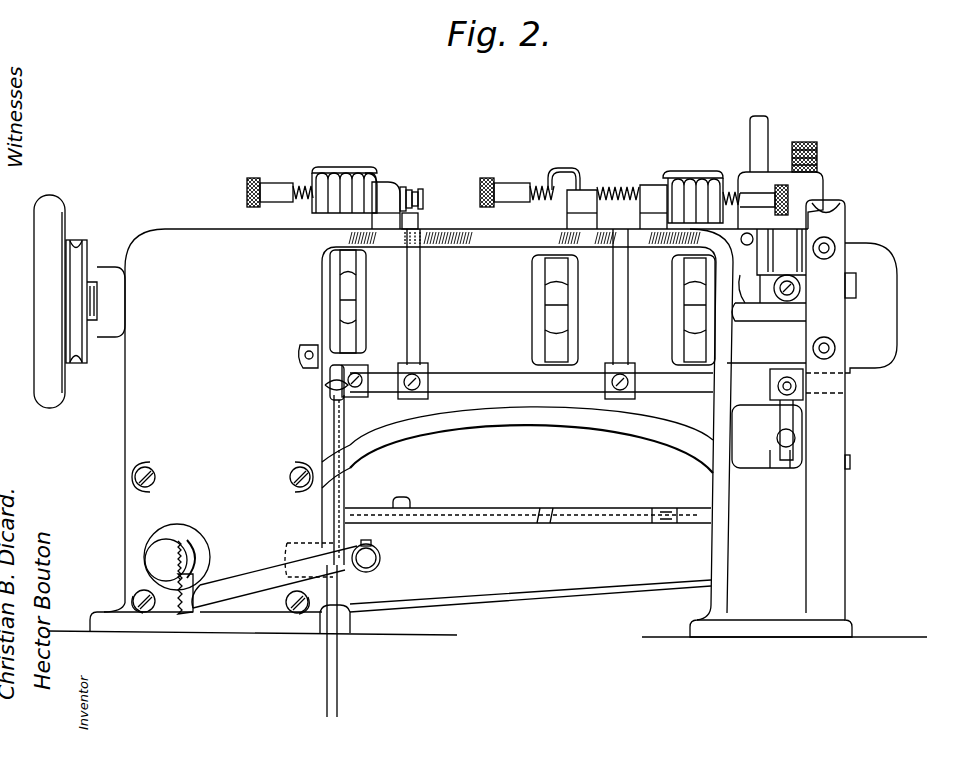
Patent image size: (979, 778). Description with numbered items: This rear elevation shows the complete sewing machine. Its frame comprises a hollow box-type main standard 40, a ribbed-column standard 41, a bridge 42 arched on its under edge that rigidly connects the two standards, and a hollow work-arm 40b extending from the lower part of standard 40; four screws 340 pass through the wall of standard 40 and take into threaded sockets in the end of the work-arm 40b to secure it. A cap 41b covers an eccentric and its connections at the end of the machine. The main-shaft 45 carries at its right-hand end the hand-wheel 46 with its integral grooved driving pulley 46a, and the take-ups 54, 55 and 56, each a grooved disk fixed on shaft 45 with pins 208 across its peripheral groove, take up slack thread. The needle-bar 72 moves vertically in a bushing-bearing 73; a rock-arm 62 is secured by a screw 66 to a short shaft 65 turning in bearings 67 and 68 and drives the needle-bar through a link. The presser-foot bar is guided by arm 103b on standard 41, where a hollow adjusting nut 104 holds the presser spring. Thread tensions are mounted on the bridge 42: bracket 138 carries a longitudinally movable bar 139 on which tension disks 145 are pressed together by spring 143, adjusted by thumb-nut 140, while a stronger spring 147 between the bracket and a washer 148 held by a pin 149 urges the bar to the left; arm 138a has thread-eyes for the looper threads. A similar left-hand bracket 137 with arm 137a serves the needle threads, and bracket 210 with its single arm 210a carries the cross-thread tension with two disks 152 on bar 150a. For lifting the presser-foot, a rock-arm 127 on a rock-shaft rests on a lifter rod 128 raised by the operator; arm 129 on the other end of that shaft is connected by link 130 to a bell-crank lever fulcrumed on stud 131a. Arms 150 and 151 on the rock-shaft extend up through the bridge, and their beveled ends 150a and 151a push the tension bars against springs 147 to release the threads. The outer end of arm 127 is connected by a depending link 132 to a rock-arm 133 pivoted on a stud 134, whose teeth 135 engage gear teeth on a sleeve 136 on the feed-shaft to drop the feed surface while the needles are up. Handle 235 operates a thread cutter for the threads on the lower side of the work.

The main standard 40 is at (128, 442).
The work-arm 40b is at (570, 585).
The standard 41 is at (845, 540).
The cap 41b is at (888, 318).
The bridge 42 is at (527, 416).
The main-shaft 45 is at (330, 305).
The hand-wheel 46 is at (48, 406).
The grooved driving pulley 46a is at (78, 355).
The take-up 54 is at (350, 305).
The take-up 55 is at (545, 295).
The take-up 56 is at (688, 320).
The rock-arm 62 is at (790, 253).
The short shaft 65 is at (857, 287).
The screw 66 is at (788, 297).
The bearing 67 is at (803, 283).
The bearing 68 is at (767, 292).
The needle-bar 72 is at (762, 118).
The bushing-bearing 73 is at (752, 180).
The arm 103b is at (752, 183).
The hollow adjusting nut 104 is at (818, 165).
The rock-arm 127 is at (330, 385).
The lifter rod 128 is at (338, 697).
The arm 129 is at (790, 404).
The link 130 is at (776, 447).
The stud 131a is at (851, 462).
The depending link 132 is at (344, 498).
The rock-arm 133 is at (250, 580).
The stud 134 is at (374, 565).
The teeth 135 is at (185, 612).
The sleeve 136 is at (160, 558).
The bracket 137 is at (655, 198).
The arm 137a is at (722, 165).
The bracket 138 is at (392, 183).
The arm 138a is at (330, 167).
The bar 139 is at (418, 198).
The thumb-nut 140 is at (268, 186).
The spring 143 is at (302, 185).
The tension disks 145 is at (360, 180).
The spring 147 is at (406, 190).
The washer 148 is at (412, 193).
The pin 149 is at (418, 221).
The arm 150 is at (628, 300).
The bar 150a is at (537, 184).
The arm 151 is at (424, 305).
The beveled end 151a is at (423, 203).
The tension disks 152 is at (553, 205).
The pins 208 is at (527, 362).
The bracket 210 is at (586, 190).
The arm 210a is at (570, 170).
The operating handle 235 is at (412, 508).
The screws 340 is at (156, 470).